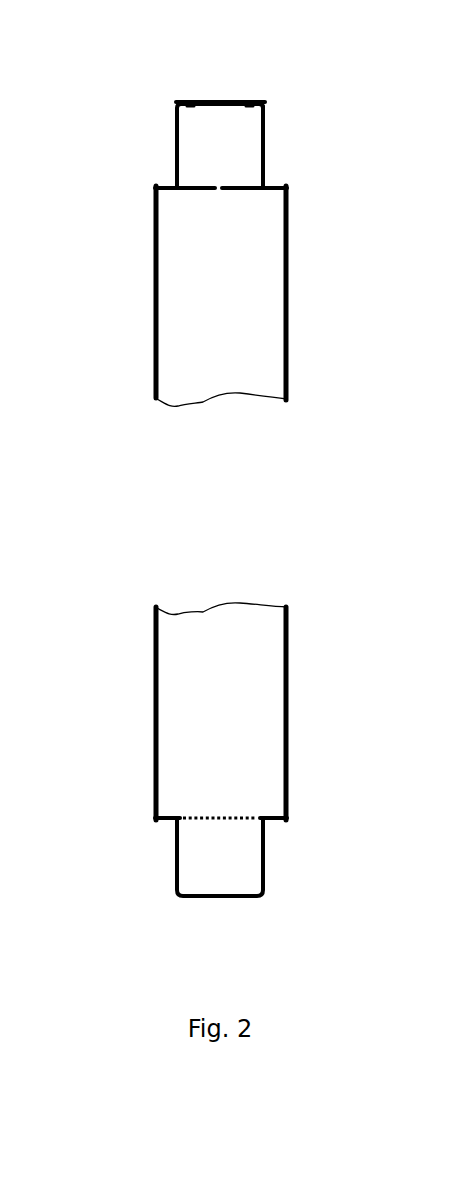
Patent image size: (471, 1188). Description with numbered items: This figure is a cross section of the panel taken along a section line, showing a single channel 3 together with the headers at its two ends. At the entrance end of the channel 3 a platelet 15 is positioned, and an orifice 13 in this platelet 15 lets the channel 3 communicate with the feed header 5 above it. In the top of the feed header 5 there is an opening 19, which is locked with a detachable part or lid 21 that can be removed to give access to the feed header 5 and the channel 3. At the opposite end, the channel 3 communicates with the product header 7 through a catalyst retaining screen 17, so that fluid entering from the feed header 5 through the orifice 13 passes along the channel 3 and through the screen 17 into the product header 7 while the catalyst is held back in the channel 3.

The channel 3 is at (221, 503).
The feed header 5 is at (193, 135).
The product header 7 is at (215, 877).
The orifice 13 is at (222, 187).
The platelet 15 is at (258, 187).
The catalyst retaining screen 17 is at (200, 817).
The opening 19 is at (197, 113).
The detachable part or lid 21 is at (222, 102).